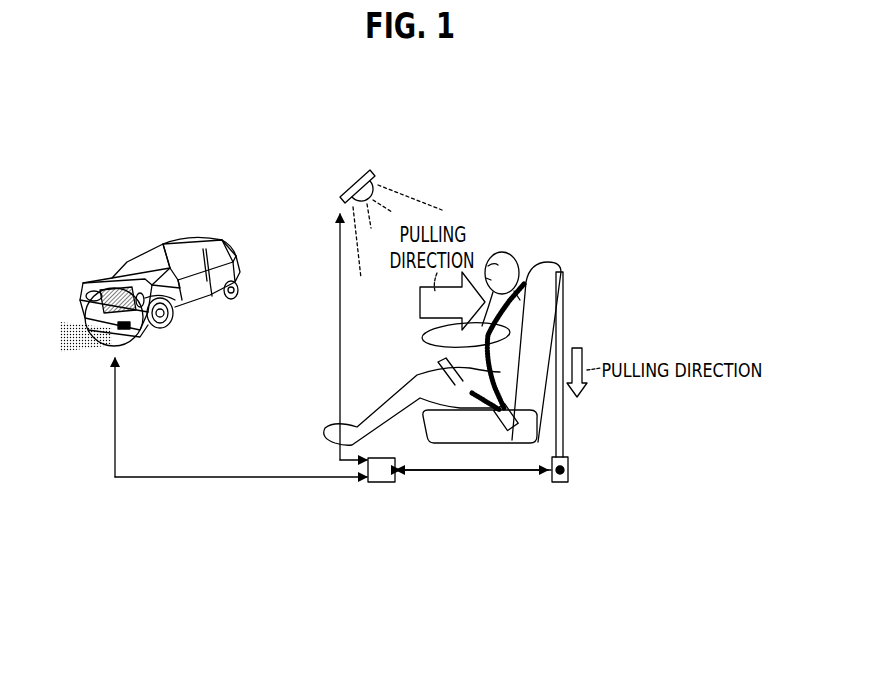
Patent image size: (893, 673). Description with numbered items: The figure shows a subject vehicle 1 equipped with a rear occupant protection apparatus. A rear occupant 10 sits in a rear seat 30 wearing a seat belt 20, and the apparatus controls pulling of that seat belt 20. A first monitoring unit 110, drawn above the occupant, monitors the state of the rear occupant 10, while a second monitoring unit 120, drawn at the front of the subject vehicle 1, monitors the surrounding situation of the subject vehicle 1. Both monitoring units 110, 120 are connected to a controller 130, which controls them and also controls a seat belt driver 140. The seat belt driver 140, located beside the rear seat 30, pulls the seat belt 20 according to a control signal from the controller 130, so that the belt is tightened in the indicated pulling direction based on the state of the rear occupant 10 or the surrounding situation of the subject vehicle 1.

The subject vehicle 1 is at (212, 253).
The rear occupant 10 is at (497, 252).
The seat belt 20 is at (522, 282).
The rear seat 30 is at (548, 262).
The first monitoring unit 110 is at (366, 172).
The second monitoring unit 120 is at (112, 348).
The controller 130 is at (380, 484).
The seat belt driver 140 is at (560, 484).